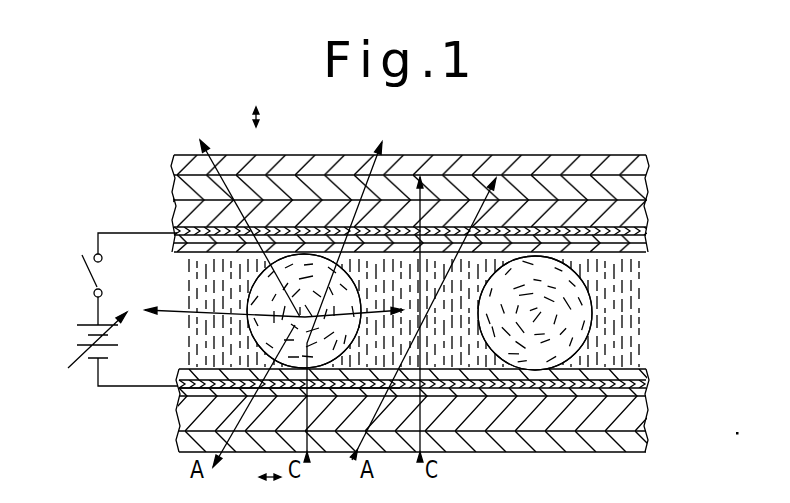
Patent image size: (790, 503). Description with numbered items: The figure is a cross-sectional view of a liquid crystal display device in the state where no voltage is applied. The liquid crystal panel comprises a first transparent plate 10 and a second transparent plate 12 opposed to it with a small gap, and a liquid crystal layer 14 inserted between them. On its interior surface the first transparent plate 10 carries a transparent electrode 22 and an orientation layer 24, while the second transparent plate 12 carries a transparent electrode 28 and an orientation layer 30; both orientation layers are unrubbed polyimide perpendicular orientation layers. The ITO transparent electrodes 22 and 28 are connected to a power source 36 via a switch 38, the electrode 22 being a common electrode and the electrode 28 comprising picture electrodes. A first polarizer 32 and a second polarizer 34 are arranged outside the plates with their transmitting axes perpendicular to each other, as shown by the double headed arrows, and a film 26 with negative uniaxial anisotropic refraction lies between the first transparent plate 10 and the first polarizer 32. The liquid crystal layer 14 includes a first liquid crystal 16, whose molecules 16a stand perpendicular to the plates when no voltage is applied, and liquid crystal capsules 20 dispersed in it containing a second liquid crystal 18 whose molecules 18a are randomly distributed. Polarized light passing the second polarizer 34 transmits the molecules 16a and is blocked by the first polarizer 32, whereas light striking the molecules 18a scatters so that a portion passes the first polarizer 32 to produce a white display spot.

The first transparent plate 10 is at (412, 219).
The second transparent plate 12 is at (405, 412).
The liquid crystal layer 14 is at (633, 330).
The first liquid crystal 16 is at (647, 445).
The molecules of the first liquid crystal 16a is at (597, 375).
The second liquid crystal 18 is at (290, 258).
The molecules of the second liquid crystal 18a is at (318, 277).
The liquid crystal capsules 20 is at (333, 362).
The transparent electrode 22 is at (177, 223).
The orientation layer 24 is at (640, 248).
The film 26 is at (645, 188).
The transparent electrode 28 is at (177, 398).
The orientation layer 30 is at (645, 373).
The first polarizer 32 is at (233, 162).
The second polarizer 34 is at (261, 448).
The power source 36 is at (73, 353).
The switch 38 is at (90, 247).